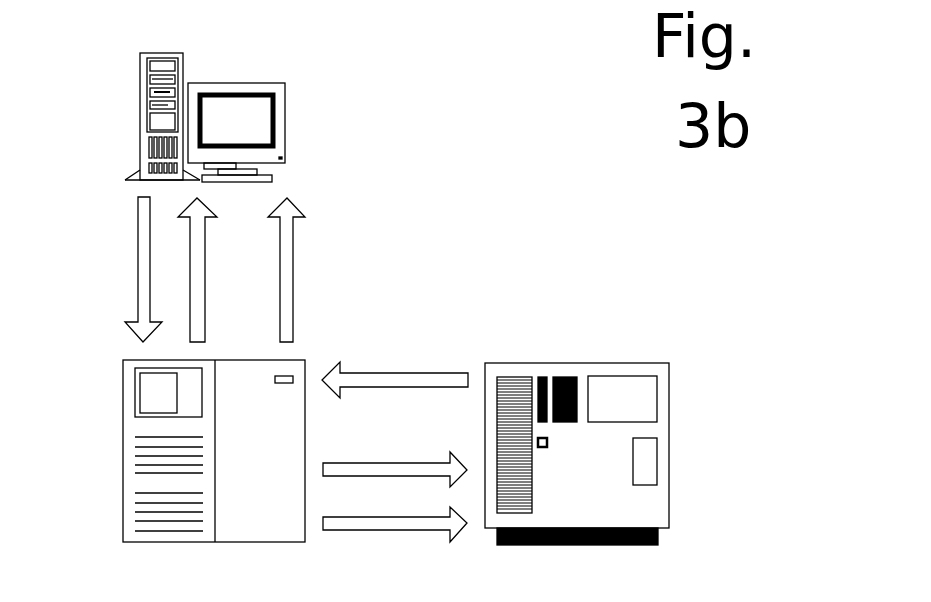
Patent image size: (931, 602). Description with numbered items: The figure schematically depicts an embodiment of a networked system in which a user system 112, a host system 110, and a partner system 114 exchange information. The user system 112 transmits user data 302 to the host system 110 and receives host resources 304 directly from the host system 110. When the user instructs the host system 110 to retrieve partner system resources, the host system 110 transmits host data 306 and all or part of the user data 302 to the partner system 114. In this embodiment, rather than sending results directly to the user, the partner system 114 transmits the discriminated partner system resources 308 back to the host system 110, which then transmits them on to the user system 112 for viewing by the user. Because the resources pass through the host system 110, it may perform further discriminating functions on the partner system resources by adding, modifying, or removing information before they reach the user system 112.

The host system 110 is at (678, 421).
The user system 112 is at (310, 92).
The partner system 114 is at (113, 437).
The user data 302 is at (282, 377).
The host resources 304 is at (211, 270).
The host data 306 is at (395, 463).
The discriminated partner system resources 308 is at (368, 298).